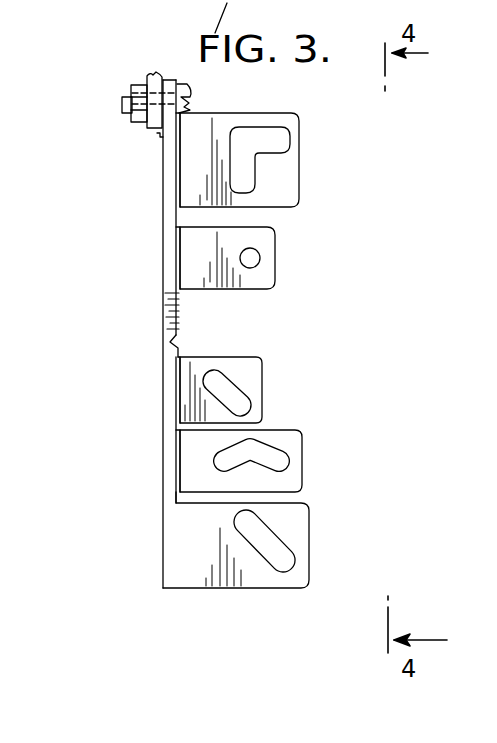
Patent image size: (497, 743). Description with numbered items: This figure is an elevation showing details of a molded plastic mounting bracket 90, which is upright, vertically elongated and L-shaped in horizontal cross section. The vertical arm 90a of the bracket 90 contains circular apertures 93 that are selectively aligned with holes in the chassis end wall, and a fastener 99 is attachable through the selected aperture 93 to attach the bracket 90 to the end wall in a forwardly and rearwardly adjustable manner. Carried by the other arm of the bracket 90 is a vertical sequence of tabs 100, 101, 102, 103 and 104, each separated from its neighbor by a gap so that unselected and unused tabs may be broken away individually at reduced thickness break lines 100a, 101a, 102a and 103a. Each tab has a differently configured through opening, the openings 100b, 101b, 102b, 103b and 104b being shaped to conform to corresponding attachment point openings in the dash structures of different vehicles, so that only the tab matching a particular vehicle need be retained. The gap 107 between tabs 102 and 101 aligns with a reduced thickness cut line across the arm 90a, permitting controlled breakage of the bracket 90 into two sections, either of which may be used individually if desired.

The mounting bracket 90 is at (150, 388).
The vertical arm 90a is at (163, 310).
The fastener 99 is at (142, 88).
The aperture 93 is at (193, 98).
The tab 100 is at (292, 177).
The break line 100a is at (176, 167).
The through opening 100b is at (278, 140).
The tab 101 is at (268, 274).
The break line 101a is at (176, 252).
The through opening 101b is at (260, 256).
The gap 107 is at (179, 340).
The tab 102 is at (253, 372).
The break line 102a is at (176, 368).
The through opening 102b is at (241, 403).
The tab 103 is at (297, 473).
The break line 103a is at (176, 473).
The through opening 103b is at (273, 453).
The tab 104 is at (297, 533).
The through opening 104b is at (269, 550).